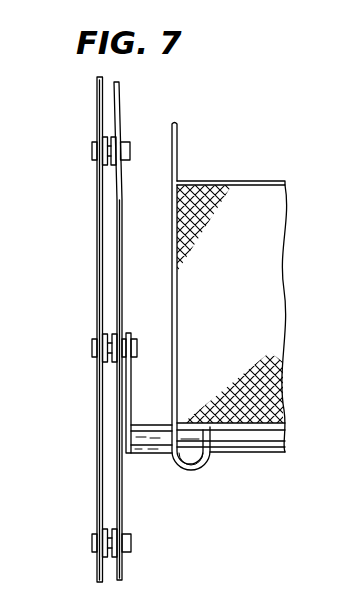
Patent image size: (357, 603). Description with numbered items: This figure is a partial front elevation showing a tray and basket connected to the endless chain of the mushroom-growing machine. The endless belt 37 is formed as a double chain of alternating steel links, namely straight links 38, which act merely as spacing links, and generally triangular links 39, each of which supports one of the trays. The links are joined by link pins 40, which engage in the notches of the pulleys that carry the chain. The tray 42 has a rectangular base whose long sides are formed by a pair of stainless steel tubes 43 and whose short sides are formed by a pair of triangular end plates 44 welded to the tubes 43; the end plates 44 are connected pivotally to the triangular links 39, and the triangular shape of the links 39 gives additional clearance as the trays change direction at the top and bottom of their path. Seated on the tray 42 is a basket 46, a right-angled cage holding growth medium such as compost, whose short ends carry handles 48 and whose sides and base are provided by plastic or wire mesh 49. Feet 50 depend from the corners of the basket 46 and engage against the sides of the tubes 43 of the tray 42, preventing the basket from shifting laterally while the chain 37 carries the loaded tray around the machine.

The endless belt 37 is at (88, 297).
The straight link 38 is at (99, 488).
The triangular link 39 is at (96, 243).
The link pin 40 is at (104, 150).
The tray 42 is at (137, 386).
The stainless steel tube 43 is at (204, 445).
The triangular end plate 44 is at (127, 418).
The basket 46 is at (242, 190).
The handle 48 is at (176, 128).
The mesh 49 is at (197, 188).
The foot 50 is at (184, 473).